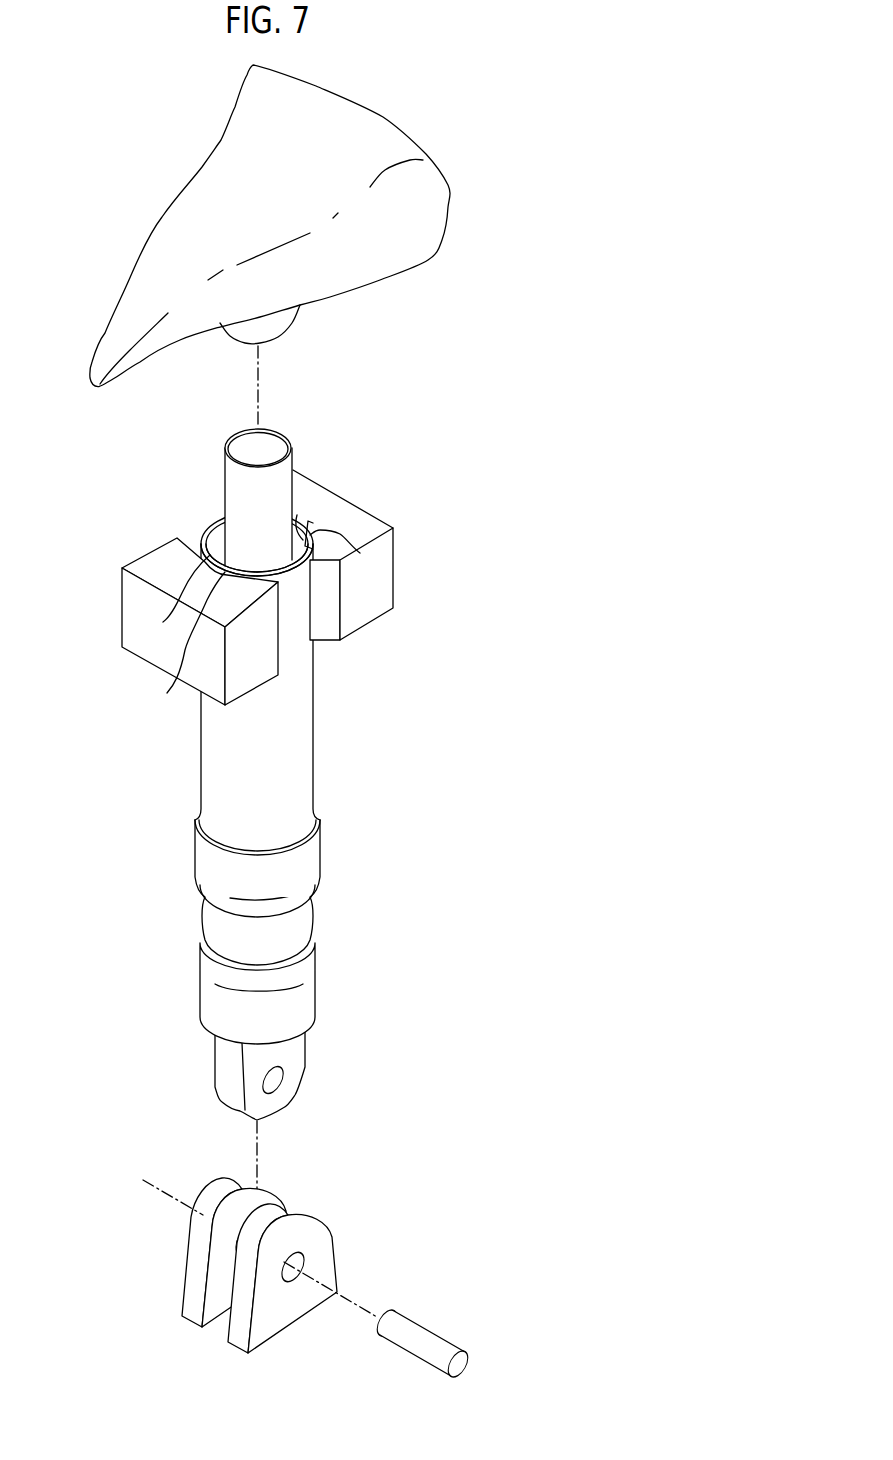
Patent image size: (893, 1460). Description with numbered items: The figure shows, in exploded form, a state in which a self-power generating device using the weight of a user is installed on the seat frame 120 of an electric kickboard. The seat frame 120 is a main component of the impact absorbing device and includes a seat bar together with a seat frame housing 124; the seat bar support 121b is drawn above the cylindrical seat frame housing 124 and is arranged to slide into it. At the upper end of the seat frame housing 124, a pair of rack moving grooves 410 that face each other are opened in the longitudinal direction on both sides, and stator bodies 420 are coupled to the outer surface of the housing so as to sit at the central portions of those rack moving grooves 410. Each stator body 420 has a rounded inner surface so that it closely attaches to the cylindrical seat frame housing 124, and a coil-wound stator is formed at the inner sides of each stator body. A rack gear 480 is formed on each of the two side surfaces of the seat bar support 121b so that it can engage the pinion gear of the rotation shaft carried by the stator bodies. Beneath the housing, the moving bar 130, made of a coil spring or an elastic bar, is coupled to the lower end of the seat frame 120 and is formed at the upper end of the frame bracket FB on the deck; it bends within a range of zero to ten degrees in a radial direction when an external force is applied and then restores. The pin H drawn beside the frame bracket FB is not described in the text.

The seat frame 120 is at (410, 242).
The seat bar support 121b is at (278, 492).
The seat frame housing 124 is at (300, 768).
The moving bar 130 is at (302, 925).
The rack moving grooves 410 is at (163, 622).
The stator bodies 420 is at (145, 565).
The rack gear 480 is at (167, 693).
The frame bracket FB is at (313, 1243).
The hinge pin H is at (418, 1333).